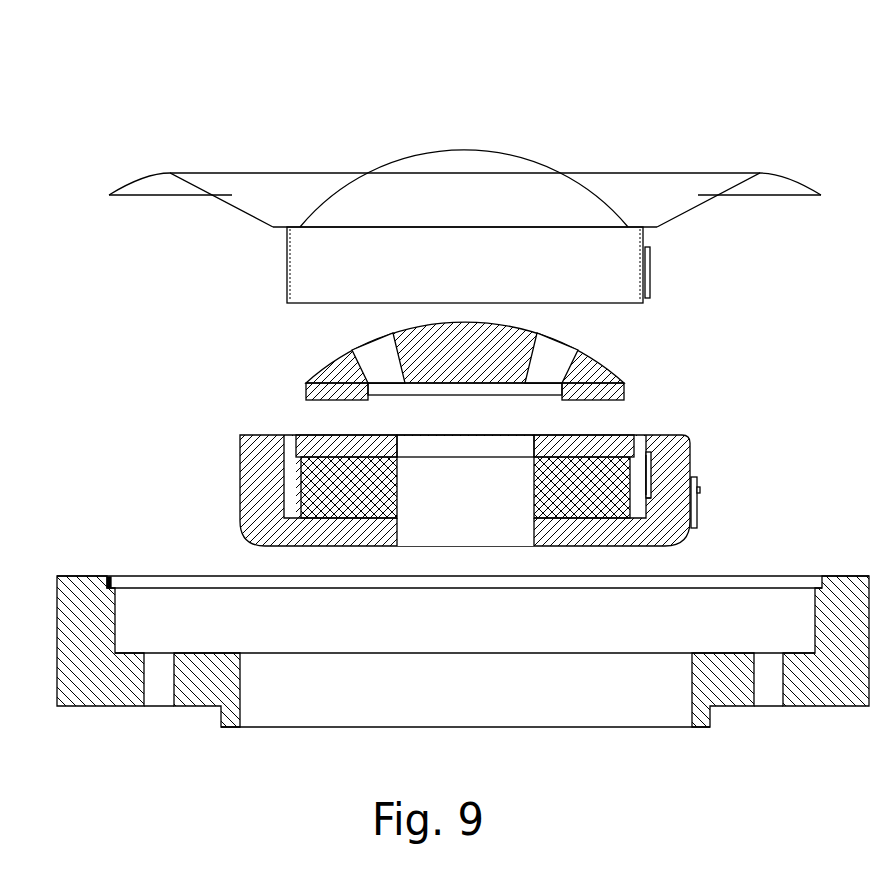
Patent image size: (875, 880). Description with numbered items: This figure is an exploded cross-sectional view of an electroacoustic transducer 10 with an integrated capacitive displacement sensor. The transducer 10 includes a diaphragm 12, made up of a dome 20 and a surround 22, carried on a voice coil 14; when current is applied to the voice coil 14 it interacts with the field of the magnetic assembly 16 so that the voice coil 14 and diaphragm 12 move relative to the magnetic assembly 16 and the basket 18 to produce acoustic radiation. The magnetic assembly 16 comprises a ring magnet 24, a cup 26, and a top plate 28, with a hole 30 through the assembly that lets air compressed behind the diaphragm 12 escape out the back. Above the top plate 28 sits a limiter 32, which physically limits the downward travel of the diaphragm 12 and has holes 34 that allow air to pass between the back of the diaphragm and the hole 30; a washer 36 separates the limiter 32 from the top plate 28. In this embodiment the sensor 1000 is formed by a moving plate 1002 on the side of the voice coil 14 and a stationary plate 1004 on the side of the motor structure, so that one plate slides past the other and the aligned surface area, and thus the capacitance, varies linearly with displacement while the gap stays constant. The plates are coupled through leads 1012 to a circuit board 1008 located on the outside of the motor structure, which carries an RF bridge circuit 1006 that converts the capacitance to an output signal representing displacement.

The electroacoustic transducer 10 is at (178, 66).
The diaphragm 12 is at (287, 163).
The voice coil 14 is at (642, 270).
The magnetic assembly 16 is at (236, 520).
The basket 18 is at (210, 690).
The dome 20 is at (492, 153).
The surround 22 is at (745, 177).
The ring magnet 24 is at (557, 483).
The cup 26 is at (372, 528).
The top plate 28 is at (388, 443).
The hole 30 is at (463, 449).
The limiter 32 is at (297, 360).
The holes 34 is at (376, 345).
The washer 36 is at (628, 394).
The sensor 1000 is at (661, 468).
The moving plate 1002 is at (652, 268).
The stationary plate 1004 is at (654, 478).
The RF bridge circuit 1006 is at (700, 491).
The circuit board 1008 is at (699, 516).
The leads 1012 is at (655, 498).